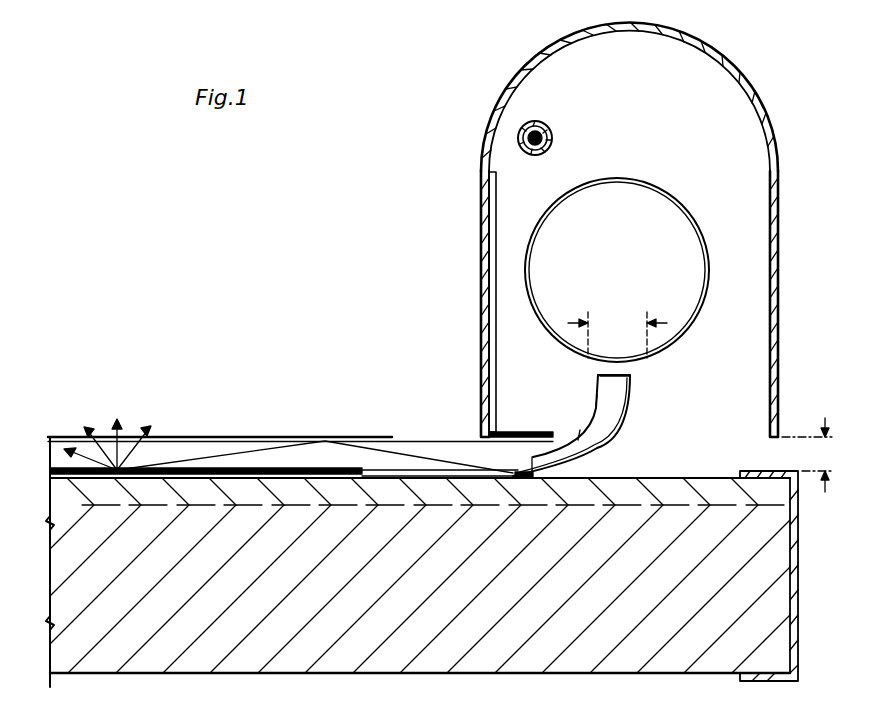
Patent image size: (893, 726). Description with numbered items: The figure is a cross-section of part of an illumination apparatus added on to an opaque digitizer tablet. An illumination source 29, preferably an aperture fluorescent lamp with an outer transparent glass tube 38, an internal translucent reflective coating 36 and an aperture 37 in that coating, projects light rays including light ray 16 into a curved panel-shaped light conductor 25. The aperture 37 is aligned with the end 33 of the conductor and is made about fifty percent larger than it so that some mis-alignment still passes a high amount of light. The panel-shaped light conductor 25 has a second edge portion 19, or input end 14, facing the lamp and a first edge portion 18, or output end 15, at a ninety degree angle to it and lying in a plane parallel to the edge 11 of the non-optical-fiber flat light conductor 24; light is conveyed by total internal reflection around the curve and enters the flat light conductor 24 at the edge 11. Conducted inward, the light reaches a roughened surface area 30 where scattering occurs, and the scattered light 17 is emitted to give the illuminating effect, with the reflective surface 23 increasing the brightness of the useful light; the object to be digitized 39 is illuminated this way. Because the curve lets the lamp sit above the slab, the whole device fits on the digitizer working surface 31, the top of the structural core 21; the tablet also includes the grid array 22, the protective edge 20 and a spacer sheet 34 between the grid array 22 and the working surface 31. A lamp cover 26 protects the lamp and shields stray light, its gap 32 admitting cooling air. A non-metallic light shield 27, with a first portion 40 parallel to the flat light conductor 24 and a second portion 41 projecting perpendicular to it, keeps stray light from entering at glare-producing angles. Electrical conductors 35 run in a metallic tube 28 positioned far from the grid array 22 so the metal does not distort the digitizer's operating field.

The edge 11 is at (537, 450).
The input end 14 is at (629, 408).
The output end 15 is at (570, 448).
The light ray 16 is at (633, 382).
The scattered light 17 is at (115, 443).
The first edge portion 18 is at (536, 460).
The second edge portion 19 is at (631, 374).
The protective edge 20 is at (799, 550).
The structural core 21 is at (775, 630).
The grid array 22 is at (155, 506).
The reflective surface 23 is at (80, 478).
The non-optical-fiber flat light conductor 24 is at (55, 455).
The curved panel-shaped light conductor 25 is at (596, 403).
The lamp cover 26 is at (779, 327).
The light shield 27 is at (512, 263).
The metallic tube 28 is at (518, 142).
The illumination source 29 is at (686, 200).
The roughened surface area 30 is at (222, 468).
The working surface 31 is at (684, 477).
The gap 32 is at (810, 455).
The end 33 is at (602, 384).
The spacer sheet 34 is at (778, 490).
The electrical conductors 35 is at (528, 124).
The internal translucent reflective coating 36 is at (708, 273).
The aperture 37 is at (617, 334).
The outer transparent glass tube 38 is at (708, 240).
The object to be digitized 39 is at (320, 434).
The first portion 40 is at (515, 430).
The second portion 41 is at (496, 198).